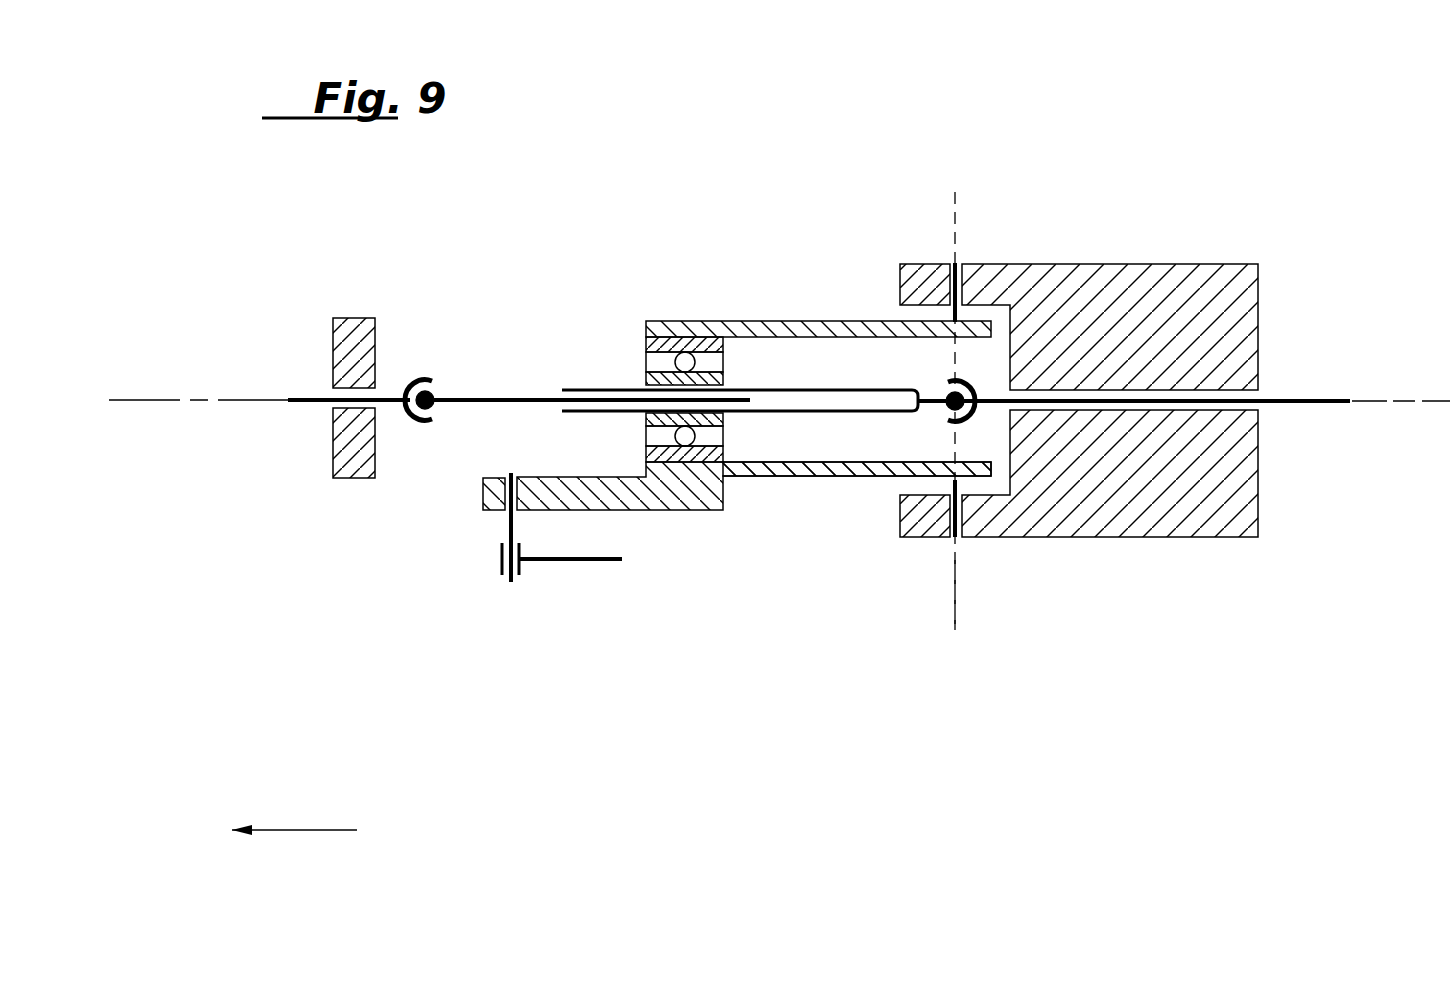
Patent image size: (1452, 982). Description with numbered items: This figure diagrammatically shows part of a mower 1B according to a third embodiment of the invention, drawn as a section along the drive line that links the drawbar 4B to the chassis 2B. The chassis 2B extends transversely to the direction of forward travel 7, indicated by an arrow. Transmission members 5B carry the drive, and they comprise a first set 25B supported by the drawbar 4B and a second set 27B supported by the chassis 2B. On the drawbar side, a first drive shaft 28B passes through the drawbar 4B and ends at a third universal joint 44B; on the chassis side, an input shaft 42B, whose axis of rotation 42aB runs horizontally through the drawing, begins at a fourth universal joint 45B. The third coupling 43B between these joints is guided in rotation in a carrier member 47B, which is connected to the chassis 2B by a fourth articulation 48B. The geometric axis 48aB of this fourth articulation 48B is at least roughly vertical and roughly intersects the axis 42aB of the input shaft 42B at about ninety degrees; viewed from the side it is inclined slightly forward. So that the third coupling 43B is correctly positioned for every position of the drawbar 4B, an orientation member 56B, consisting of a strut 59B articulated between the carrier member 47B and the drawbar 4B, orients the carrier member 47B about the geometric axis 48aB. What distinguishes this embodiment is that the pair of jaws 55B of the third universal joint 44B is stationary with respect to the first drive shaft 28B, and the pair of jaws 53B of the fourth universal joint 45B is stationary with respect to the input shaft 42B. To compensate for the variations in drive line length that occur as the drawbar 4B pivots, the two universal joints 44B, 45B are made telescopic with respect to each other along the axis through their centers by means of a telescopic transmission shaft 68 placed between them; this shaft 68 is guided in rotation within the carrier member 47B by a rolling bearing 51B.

The mower 1B is at (783, 212).
The chassis 2B is at (1255, 262).
The drawbar 4B is at (358, 318).
The transmission members 5B is at (312, 404).
The direction of forward travel 7 is at (298, 830).
The first set 25B is at (328, 407).
The second set 27B is at (1305, 397).
The first drive shaft 28B is at (210, 398).
The input shaft 42B is at (1272, 407).
The axis of rotation of the input shaft 42aB is at (1400, 400).
The third coupling 43B is at (754, 391).
The third universal joint 44B is at (436, 391).
The fourth universal joint 45B is at (980, 384).
The carrier member 47B is at (832, 480).
The fourth articulation 48B is at (954, 262).
The geometric axis of the fourth articulation 48aB is at (955, 580).
The rolling bearing 51B is at (688, 352).
The pair of jaws 53B is at (973, 418).
The pair of jaws 55B is at (418, 421).
The orientation member 56B is at (555, 563).
The strut 59B is at (600, 563).
The telescopic transmission shaft 68 is at (837, 390).